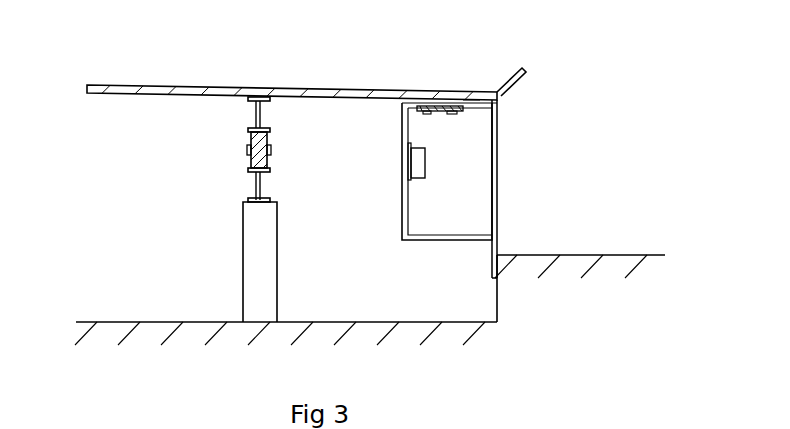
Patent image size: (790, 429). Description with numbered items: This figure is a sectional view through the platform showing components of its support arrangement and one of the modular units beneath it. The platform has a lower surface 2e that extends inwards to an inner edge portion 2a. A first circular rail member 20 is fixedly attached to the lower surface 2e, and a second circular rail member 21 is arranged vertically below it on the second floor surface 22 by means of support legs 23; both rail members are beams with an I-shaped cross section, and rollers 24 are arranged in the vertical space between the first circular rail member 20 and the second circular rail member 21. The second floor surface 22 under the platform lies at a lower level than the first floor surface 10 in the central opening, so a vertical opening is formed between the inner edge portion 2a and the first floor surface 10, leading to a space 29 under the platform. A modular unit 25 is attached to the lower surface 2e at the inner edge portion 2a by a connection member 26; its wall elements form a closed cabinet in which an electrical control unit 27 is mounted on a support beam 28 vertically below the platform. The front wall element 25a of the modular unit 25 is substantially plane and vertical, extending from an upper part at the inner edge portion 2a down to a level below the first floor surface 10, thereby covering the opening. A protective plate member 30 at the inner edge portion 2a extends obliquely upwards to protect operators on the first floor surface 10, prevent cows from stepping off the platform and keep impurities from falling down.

The lower surface 2e is at (128, 97).
The inner edge portion 2a is at (472, 105).
The protective plate member 30 is at (523, 78).
The first circular rail member 20 is at (257, 117).
The rollers 24 is at (268, 152).
The second circular rail member 21 is at (253, 177).
The support legs 23 is at (262, 257).
The second floor surface 22 is at (148, 322).
The space 29 is at (354, 262).
The first floor surface 10 is at (583, 255).
The modular unit 25 is at (415, 238).
The front wall element 25a is at (497, 163).
The connection member 26 is at (422, 107).
The support beam 28 is at (402, 168).
The electrical control unit 27 is at (417, 162).